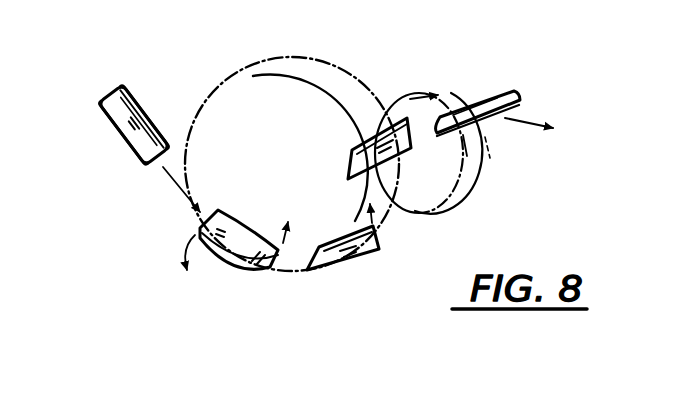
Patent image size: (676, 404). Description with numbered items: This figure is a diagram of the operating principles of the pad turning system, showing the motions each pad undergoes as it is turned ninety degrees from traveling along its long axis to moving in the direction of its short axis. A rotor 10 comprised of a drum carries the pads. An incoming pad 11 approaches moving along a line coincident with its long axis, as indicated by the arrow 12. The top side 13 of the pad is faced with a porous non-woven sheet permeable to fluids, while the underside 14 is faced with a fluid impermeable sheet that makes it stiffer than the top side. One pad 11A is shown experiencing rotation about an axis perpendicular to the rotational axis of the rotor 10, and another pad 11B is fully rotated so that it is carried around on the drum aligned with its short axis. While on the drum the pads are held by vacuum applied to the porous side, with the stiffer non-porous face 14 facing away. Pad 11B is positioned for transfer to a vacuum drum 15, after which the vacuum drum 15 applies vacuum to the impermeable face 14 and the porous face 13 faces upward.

The rotor 10 is at (398, 30).
The incoming pad 11 is at (143, 173).
The pad experiencing rotation 11A is at (355, 264).
The fully rotated pad 11B is at (348, 163).
The arrow 12 is at (102, 86).
The top side of the pad 13 is at (131, 119).
The underside of the pad 14 is at (124, 152).
The vacuum drum 15 is at (458, 206).